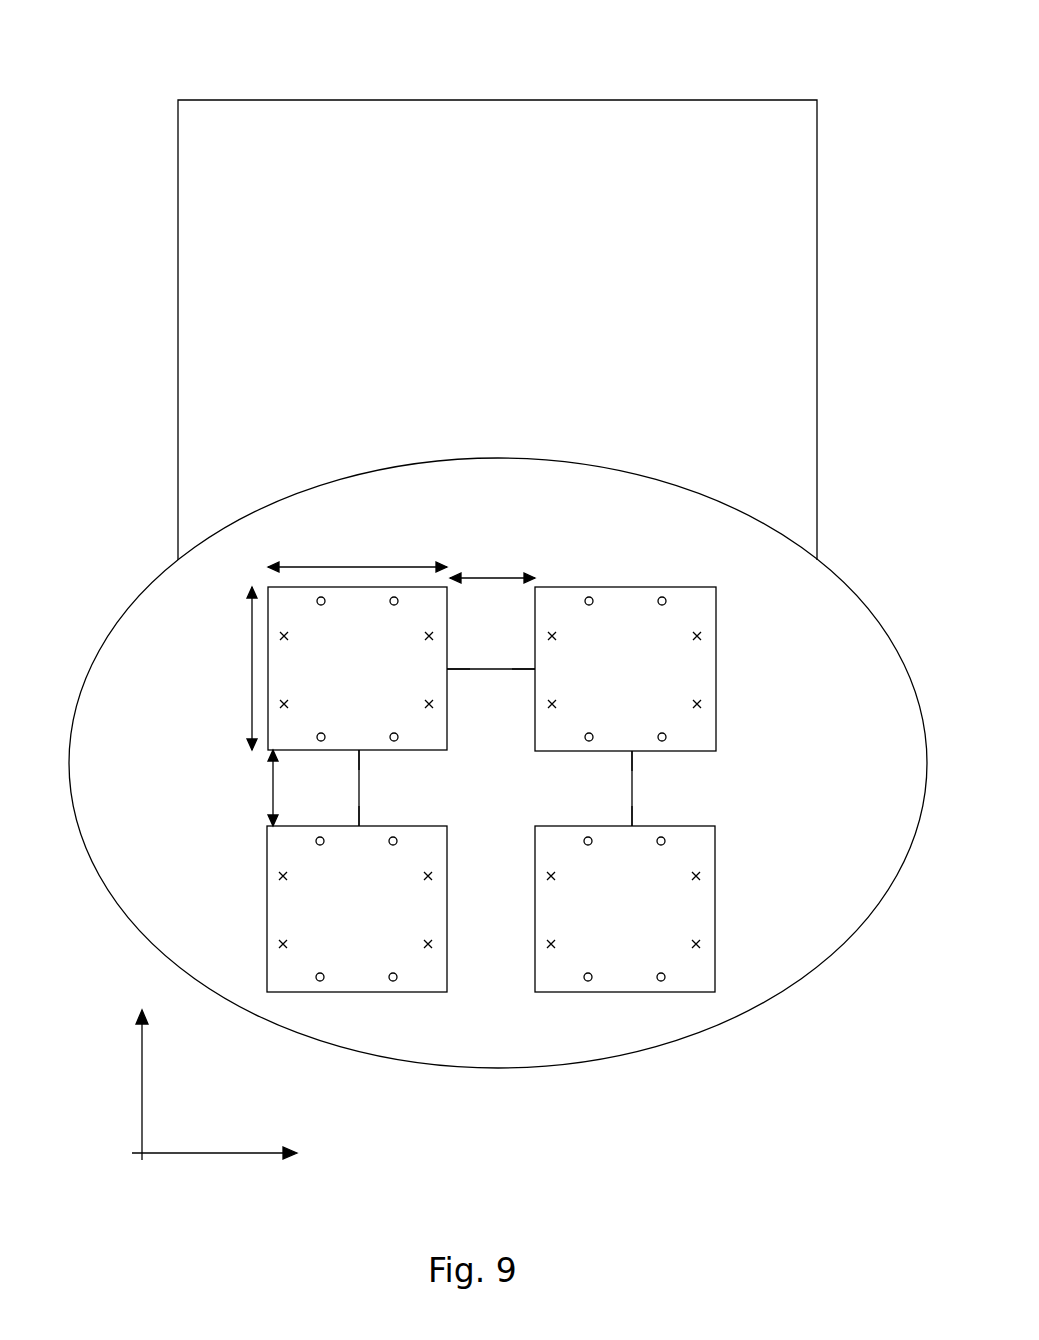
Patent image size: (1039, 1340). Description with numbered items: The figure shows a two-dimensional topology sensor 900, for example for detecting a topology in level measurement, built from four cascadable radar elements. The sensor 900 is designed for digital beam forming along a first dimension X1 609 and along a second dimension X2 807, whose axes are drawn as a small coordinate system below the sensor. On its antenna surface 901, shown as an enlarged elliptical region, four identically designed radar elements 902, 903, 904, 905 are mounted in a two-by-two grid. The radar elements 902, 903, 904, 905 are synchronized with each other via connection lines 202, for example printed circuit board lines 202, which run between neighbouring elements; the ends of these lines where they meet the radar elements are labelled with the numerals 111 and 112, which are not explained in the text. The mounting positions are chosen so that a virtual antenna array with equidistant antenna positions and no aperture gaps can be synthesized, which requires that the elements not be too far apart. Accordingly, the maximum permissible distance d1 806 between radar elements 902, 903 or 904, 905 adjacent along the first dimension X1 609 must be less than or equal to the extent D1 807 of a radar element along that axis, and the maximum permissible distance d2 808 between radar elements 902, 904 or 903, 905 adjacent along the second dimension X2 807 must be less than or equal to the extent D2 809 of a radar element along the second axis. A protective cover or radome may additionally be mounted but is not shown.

The two-dimensional sensor 900 is at (708, 100).
The antenna surface 901 is at (862, 645).
The radar element 902 is at (447, 623).
The radar element 903 is at (716, 620).
The radar element 904 is at (447, 880).
The radar element 905 is at (716, 875).
The connection lines 202 is at (495, 669).
The second connector 112 is at (447, 669).
The first connector 111 is at (533, 669).
The second dimension X2 / extent D1 807 is at (360, 530).
The first dimension X1 609 is at (270, 1190).
The maximum permissible distance d1 806 is at (495, 542).
The extent D2 809 is at (197, 670).
The maximum permissible distance d2 808 is at (228, 800).